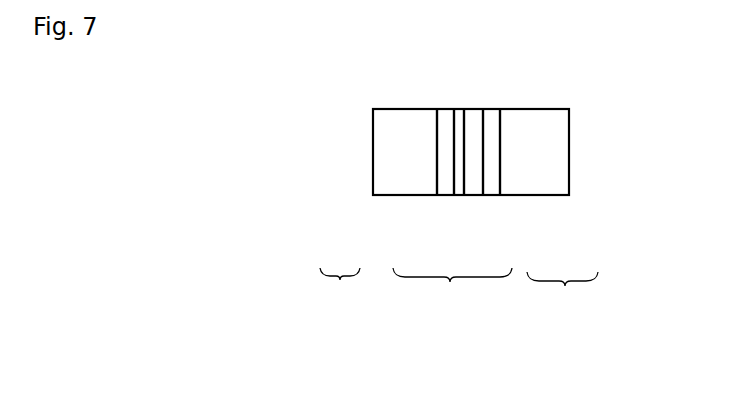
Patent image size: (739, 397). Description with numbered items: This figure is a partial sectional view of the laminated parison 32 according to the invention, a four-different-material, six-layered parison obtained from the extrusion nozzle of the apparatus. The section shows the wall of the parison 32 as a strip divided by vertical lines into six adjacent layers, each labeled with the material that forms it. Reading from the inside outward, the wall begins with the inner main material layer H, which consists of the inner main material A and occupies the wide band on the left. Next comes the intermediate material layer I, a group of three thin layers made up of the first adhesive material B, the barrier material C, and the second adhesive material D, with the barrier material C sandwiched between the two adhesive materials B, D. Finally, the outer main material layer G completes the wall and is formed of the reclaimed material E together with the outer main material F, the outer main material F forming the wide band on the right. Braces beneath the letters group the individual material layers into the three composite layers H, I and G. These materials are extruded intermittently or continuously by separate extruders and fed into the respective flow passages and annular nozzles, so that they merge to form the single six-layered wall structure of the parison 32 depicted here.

The laminated parison 32 is at (588, 150).
The inner main material A is at (397, 183).
The first adhesive material B is at (445, 183).
The barrier material C is at (458, 183).
The second adhesive material D is at (475, 183).
The reclaimed material E is at (492, 183).
The outer main material F is at (543, 183).
The outer main material layer G is at (562, 290).
The inner main material layer H is at (340, 287).
The intermediate material layer I is at (452, 287).